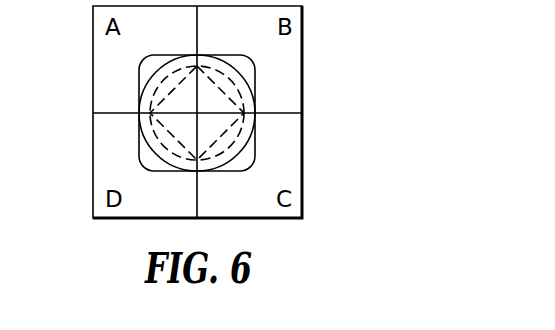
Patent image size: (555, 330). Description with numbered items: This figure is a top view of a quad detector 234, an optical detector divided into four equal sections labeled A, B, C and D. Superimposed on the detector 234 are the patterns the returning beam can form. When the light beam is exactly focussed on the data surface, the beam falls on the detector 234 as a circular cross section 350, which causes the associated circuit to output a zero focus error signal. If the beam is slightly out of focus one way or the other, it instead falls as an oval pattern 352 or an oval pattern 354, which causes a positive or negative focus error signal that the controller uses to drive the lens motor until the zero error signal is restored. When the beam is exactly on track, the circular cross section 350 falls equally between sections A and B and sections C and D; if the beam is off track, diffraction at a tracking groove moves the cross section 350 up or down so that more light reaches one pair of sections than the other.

The quad detector 234 is at (352, 214).
The circular cross section 350 is at (255, 104).
The oval pattern 352 is at (248, 78).
The oval pattern 354 is at (150, 63).